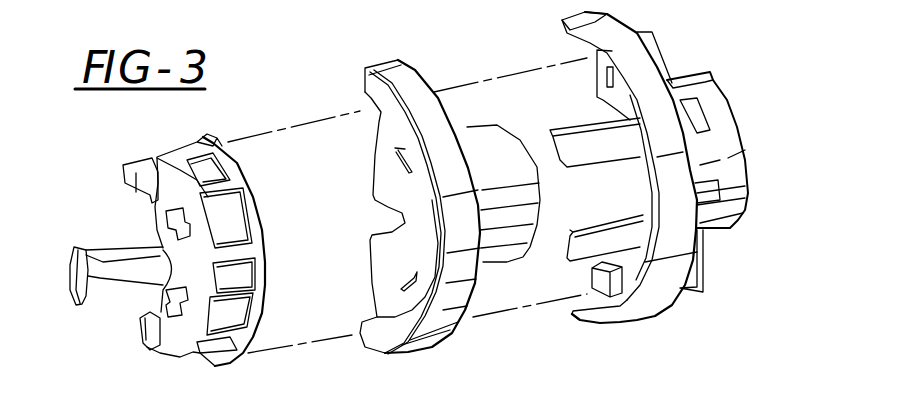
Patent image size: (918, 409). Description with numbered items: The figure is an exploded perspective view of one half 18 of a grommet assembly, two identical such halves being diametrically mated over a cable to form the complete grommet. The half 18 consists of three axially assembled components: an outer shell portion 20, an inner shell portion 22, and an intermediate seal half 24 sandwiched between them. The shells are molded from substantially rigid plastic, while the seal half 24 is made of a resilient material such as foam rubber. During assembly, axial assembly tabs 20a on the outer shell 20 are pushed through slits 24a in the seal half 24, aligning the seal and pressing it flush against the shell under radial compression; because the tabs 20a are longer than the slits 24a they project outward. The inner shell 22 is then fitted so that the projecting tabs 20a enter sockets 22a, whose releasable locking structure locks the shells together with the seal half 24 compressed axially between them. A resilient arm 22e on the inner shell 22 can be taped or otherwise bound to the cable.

The half 18 is at (293, 114).
The outer shell portion 20 is at (735, 140).
The axial assembly tabs 20a is at (572, 130).
The inner shell portion 22 is at (165, 343).
The axial assembly sockets 22a is at (173, 218).
The resilient arm 22e is at (107, 280).
The seal half 24 is at (412, 83).
The slits 24a is at (398, 157).